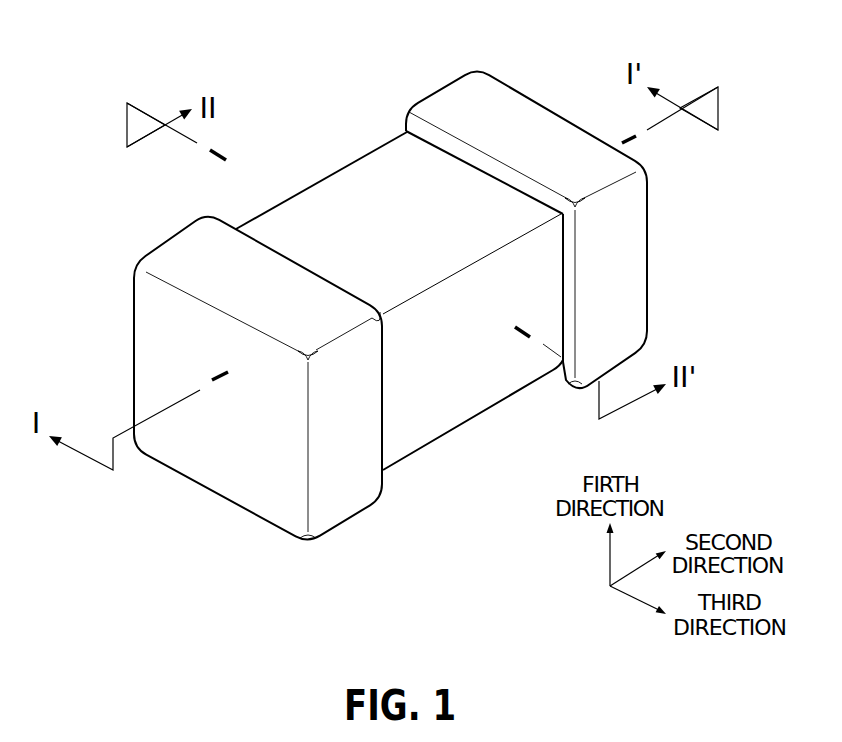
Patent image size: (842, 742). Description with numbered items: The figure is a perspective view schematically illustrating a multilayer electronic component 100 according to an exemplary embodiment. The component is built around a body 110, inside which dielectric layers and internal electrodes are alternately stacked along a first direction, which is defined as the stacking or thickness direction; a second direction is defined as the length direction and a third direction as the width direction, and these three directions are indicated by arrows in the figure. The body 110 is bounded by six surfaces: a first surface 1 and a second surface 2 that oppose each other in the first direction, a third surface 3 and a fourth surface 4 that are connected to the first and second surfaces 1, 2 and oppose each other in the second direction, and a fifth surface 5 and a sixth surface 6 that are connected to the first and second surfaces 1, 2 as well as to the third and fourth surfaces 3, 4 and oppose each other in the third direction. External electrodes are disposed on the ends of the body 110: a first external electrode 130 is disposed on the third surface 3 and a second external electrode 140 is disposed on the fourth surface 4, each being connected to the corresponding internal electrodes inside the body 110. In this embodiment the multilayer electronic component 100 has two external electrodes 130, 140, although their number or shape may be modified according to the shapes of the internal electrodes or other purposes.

The multilayer electronic component 100 is at (119, 40).
The body 110 is at (302, 217).
The first external electrode 130 is at (198, 250).
The second external electrode 140 is at (449, 106).
The first surface 1 is at (443, 400).
The second surface 2 is at (404, 178).
The third surface 3 is at (225, 446).
The fourth surface 4 is at (606, 240).
The fifth surface 5 is at (348, 205).
The sixth surface 6 is at (491, 373).